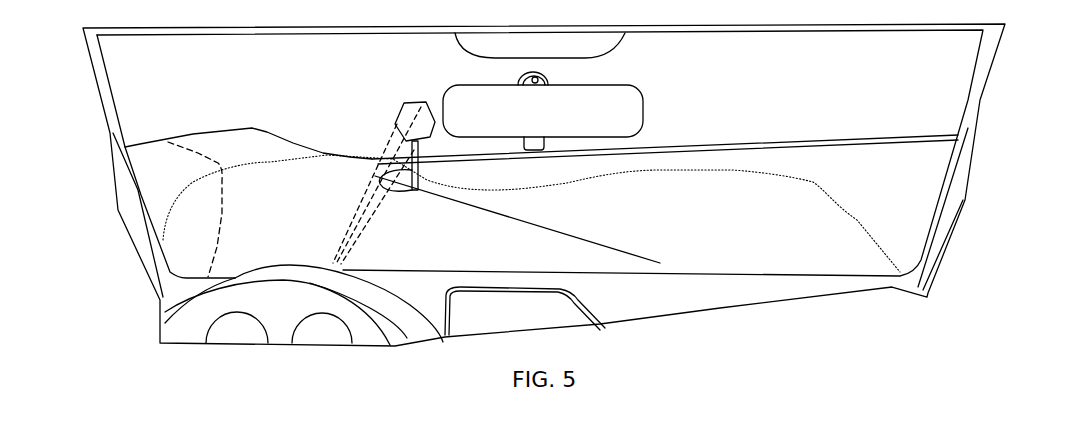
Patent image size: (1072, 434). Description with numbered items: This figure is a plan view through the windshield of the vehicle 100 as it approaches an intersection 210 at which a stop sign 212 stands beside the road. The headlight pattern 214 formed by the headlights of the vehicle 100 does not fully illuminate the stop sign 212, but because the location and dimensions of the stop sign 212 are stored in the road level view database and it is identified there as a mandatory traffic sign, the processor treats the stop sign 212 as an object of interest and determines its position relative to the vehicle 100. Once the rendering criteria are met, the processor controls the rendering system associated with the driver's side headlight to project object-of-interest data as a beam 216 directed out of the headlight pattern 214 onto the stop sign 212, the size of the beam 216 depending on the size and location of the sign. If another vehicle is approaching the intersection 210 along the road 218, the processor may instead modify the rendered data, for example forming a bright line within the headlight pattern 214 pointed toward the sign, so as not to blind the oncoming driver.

The vehicle 100 is at (973, 63).
The intersection 210 is at (358, 128).
The stop sign 212 is at (406, 103).
The headlight pattern 214 is at (815, 182).
The beam 216 is at (381, 192).
The road 218 is at (738, 144).